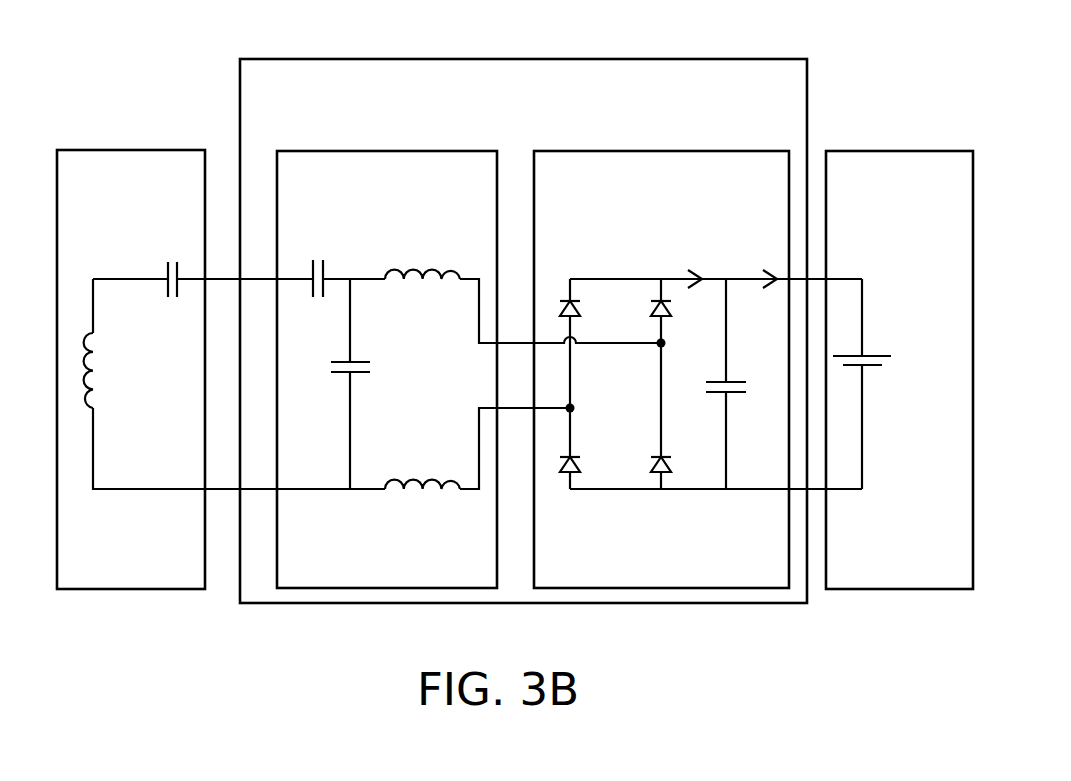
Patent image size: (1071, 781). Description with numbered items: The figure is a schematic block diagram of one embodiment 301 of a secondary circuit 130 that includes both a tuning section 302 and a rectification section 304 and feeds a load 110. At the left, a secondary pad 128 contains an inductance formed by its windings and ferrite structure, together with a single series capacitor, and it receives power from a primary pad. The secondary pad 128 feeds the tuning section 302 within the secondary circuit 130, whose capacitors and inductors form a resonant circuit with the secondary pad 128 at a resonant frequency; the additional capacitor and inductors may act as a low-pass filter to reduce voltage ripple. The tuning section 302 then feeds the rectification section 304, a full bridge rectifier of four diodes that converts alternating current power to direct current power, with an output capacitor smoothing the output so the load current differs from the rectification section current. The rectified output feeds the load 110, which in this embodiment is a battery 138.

The embodiment of a secondary circuit with a rectification section and a tuning sect 301 is at (140, 38).
The secondary pad 128 is at (113, 243).
The secondary circuit 130 is at (505, 123).
The tuning section 302 is at (368, 213).
The rectification section 304 is at (642, 213).
The load 110 is at (880, 214).
The battery 138 is at (893, 384).